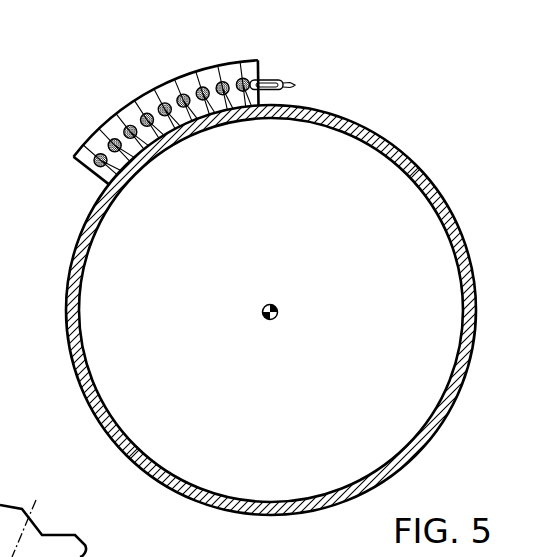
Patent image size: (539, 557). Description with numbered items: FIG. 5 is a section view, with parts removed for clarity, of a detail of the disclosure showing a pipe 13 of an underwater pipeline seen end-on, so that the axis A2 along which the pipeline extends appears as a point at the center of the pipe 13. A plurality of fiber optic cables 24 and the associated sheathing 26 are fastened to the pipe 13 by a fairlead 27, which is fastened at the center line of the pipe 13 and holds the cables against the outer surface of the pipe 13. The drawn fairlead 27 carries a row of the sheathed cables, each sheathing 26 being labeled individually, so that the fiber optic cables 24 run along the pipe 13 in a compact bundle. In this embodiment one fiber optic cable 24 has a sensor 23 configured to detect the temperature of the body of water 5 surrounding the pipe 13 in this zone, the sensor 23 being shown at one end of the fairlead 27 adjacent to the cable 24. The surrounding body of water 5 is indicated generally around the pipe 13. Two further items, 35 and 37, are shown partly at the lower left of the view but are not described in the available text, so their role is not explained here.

The body of water 5 is at (452, 118).
The pipe 13 is at (457, 238).
The sensor 23 is at (298, 82).
The fiber optic cable 24 is at (270, 79).
The sheathing 26 is at (92, 172).
The fairlead 27 is at (73, 156).
The guide element 35 is at (2, 532).
The guide element 37 is at (140, 556).
The axis A2 is at (278, 301).